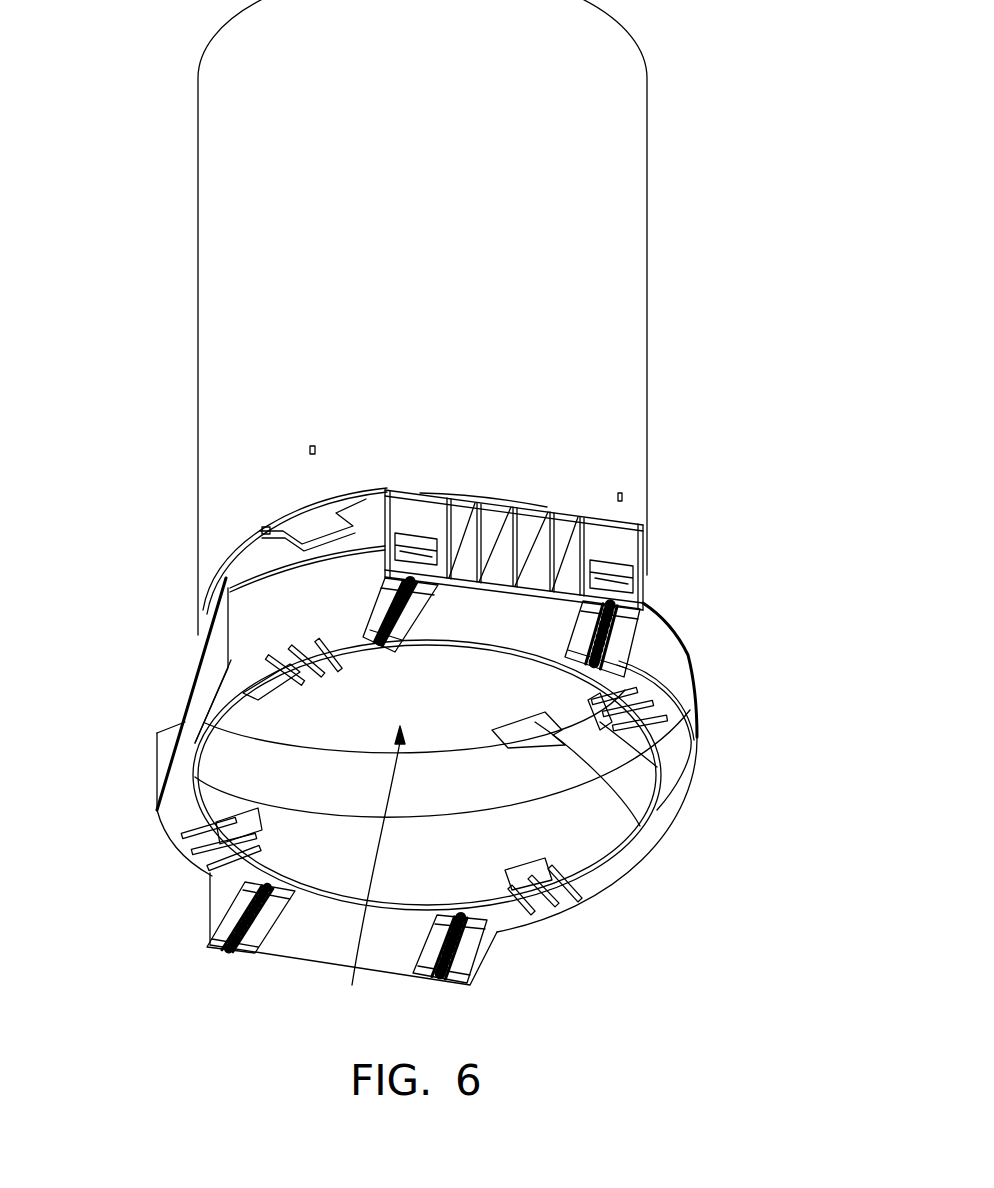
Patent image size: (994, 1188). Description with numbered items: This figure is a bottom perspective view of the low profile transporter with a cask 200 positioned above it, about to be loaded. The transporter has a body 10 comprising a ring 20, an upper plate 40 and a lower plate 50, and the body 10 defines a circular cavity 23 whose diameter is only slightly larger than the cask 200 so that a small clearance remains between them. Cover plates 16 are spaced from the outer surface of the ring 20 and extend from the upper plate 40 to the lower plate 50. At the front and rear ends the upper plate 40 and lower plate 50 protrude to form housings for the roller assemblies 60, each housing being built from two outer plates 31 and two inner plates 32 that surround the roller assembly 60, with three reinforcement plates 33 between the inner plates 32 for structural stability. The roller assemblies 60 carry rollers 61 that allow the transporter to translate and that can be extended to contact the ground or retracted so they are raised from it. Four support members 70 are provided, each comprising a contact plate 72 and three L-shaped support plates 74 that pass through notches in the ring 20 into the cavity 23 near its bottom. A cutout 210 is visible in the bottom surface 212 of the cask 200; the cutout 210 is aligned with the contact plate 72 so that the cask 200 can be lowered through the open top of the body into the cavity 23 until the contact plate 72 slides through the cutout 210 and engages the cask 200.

The cask 200 is at (616, 237).
The body 10 is at (690, 613).
The cover plate 16 is at (170, 744).
The ring 20 is at (603, 840).
The cavity 23 is at (370, 869).
The outer plate 31 is at (360, 513).
The inner plate 32 is at (527, 522).
The reinforcement plate 33 is at (545, 515).
The upper plate 40 is at (197, 656).
The lower plate 50 is at (617, 897).
The roller assembly 60 is at (362, 601).
The roller 61 is at (248, 950).
The support member 70 is at (277, 690).
The contact plate 72 is at (273, 740).
The support plate 74 is at (277, 680).
The cutout 210 is at (317, 523).
The bottom surface 212 is at (237, 574).